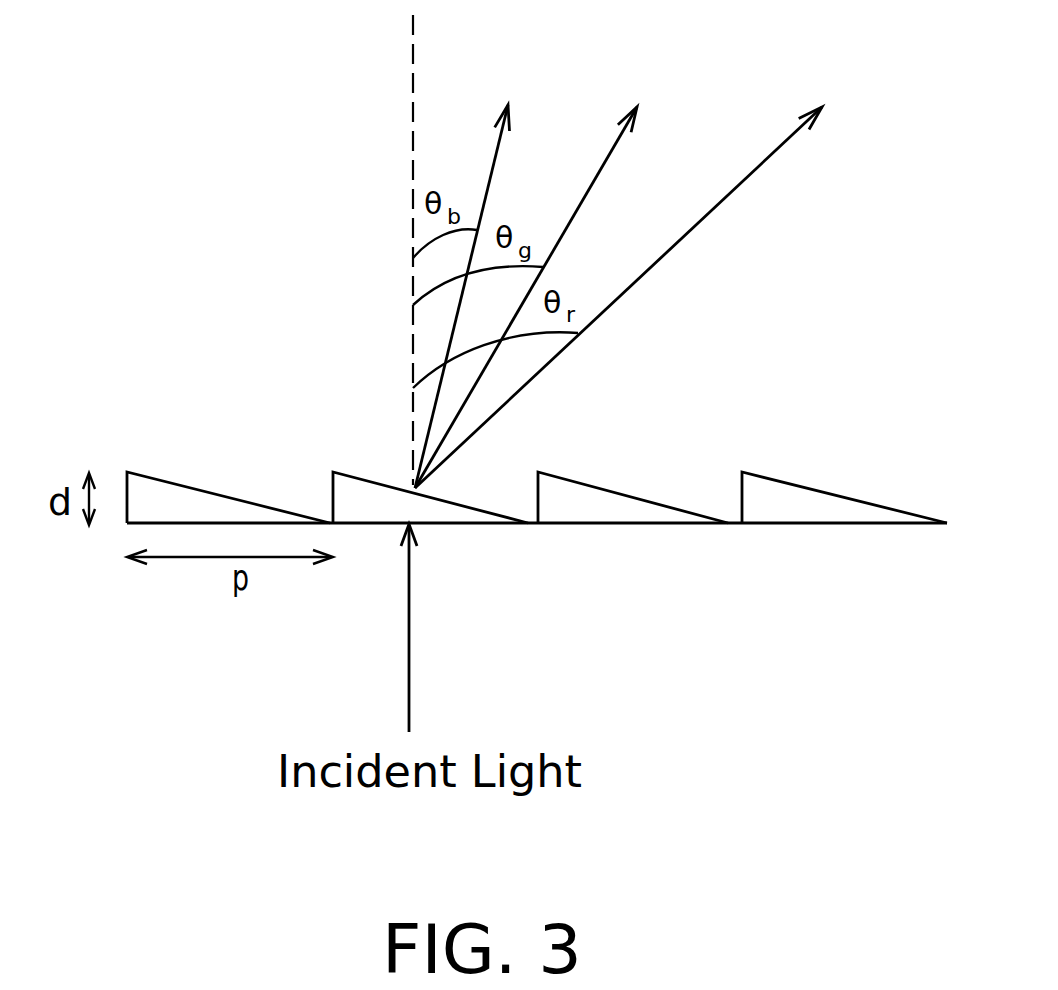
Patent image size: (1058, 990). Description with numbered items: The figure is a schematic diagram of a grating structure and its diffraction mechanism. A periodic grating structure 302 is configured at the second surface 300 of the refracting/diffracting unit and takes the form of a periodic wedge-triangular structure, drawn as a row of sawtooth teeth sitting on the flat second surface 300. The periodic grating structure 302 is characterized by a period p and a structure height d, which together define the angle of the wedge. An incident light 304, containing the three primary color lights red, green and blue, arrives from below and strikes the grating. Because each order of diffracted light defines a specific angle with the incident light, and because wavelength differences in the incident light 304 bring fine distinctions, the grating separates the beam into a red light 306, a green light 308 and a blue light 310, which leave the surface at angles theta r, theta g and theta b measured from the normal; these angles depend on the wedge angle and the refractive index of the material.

The second surface 300 is at (820, 523).
The periodic grating structure 302 is at (792, 492).
The incident light 304 is at (409, 657).
The red light 306 is at (725, 200).
The green light 308 is at (597, 173).
The blue light 310 is at (493, 167).